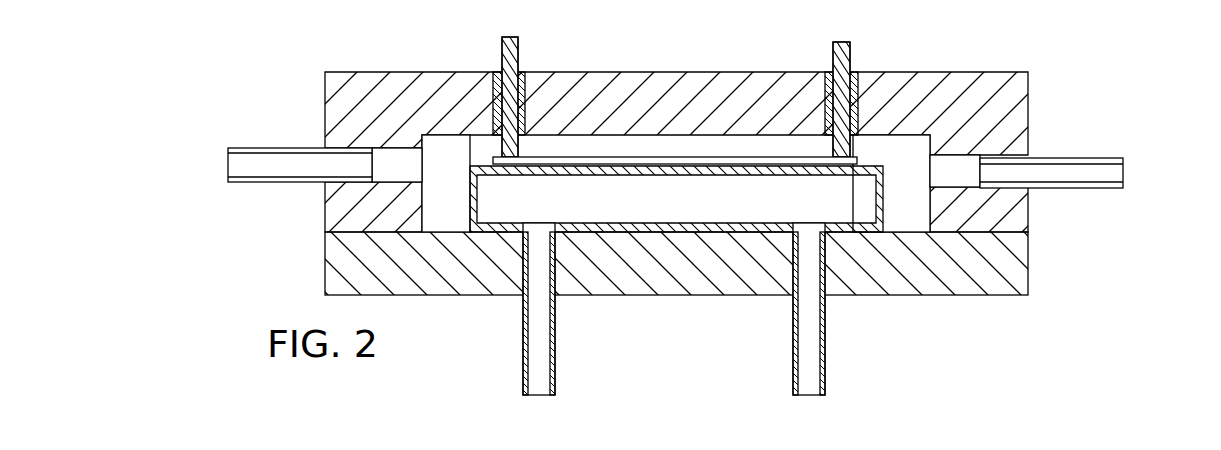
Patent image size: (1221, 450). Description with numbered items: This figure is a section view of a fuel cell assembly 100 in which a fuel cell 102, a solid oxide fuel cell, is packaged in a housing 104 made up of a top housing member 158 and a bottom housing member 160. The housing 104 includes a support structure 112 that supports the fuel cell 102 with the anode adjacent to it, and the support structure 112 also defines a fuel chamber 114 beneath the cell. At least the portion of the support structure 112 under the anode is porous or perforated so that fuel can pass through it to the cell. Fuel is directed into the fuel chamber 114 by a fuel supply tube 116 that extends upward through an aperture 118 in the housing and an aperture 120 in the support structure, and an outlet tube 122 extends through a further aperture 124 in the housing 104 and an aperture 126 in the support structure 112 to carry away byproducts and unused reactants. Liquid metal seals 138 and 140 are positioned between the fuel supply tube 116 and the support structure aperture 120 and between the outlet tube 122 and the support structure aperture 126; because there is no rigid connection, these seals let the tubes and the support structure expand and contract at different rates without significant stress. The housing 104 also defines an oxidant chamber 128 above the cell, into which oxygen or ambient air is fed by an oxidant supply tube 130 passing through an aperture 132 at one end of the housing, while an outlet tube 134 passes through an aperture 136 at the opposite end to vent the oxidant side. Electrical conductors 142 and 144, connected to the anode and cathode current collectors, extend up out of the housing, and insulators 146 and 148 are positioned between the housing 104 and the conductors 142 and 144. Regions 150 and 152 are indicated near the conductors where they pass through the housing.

The fuel cell assembly 100 is at (1093, 75).
The fuel cell 102 is at (630, 155).
The housing 104 is at (1017, 55).
The support structure 112 is at (884, 185).
The fuel chamber 114 is at (738, 214).
The fuel supply tube 116 is at (575, 314).
The aperture 118 is at (562, 282).
The aperture 120 is at (536, 218).
The outlet tube 122 is at (850, 315).
The aperture 124 is at (832, 283).
The aperture 126 is at (809, 218).
The oxidant chamber 128 is at (470, 161).
The oxidant supply tube 130 is at (263, 148).
The aperture 132 is at (325, 187).
The outlet tube 134 is at (1115, 158).
The aperture 136 is at (1003, 190).
The liquid metal seal 138 is at (515, 238).
The liquid metal seal 140 is at (783, 238).
The electrical conductor 142 is at (512, 37).
The electrical conductor 144 is at (845, 42).
The insulator 146 is at (525, 72).
The insulator 148 is at (858, 72).
The first upper bore 150 is at (496, 148).
The second upper bore 152 is at (830, 147).
The top housing member 158 is at (325, 83).
The bottom housing member 160 is at (323, 255).